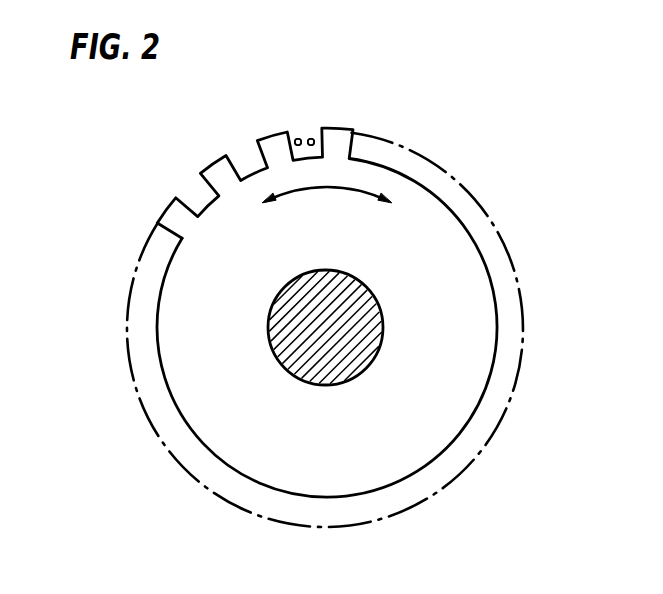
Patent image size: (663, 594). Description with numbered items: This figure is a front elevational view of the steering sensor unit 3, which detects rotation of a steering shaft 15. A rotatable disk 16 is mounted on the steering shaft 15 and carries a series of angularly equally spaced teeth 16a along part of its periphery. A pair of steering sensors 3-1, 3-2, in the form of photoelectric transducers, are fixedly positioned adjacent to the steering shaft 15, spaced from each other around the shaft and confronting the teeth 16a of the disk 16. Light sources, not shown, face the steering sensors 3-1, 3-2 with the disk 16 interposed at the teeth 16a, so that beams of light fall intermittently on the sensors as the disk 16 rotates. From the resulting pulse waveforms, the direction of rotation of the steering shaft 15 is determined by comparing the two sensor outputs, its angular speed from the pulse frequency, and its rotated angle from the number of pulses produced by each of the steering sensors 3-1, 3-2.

The steering sensor unit 3 is at (367, 87).
The steering sensor 3-1 is at (298, 138).
The steering sensor 3-2 is at (311, 138).
The steering shaft 15 is at (377, 328).
The rotatable disk 16 is at (455, 236).
The teeth 16a is at (207, 166).